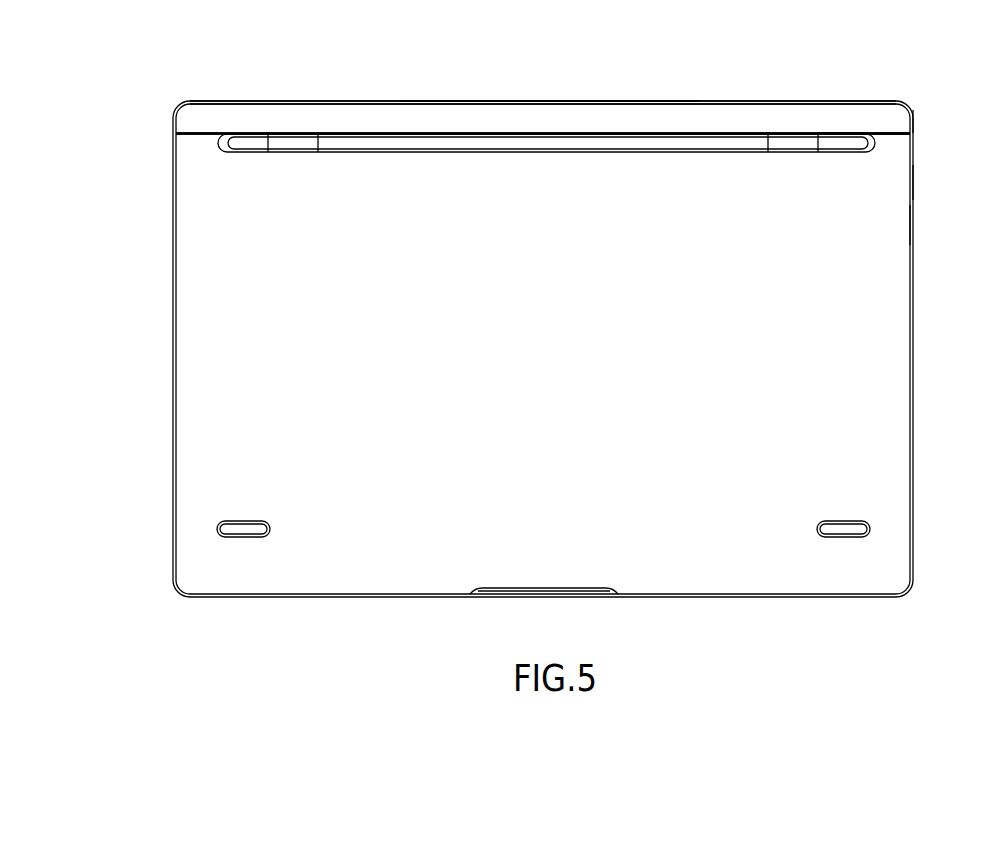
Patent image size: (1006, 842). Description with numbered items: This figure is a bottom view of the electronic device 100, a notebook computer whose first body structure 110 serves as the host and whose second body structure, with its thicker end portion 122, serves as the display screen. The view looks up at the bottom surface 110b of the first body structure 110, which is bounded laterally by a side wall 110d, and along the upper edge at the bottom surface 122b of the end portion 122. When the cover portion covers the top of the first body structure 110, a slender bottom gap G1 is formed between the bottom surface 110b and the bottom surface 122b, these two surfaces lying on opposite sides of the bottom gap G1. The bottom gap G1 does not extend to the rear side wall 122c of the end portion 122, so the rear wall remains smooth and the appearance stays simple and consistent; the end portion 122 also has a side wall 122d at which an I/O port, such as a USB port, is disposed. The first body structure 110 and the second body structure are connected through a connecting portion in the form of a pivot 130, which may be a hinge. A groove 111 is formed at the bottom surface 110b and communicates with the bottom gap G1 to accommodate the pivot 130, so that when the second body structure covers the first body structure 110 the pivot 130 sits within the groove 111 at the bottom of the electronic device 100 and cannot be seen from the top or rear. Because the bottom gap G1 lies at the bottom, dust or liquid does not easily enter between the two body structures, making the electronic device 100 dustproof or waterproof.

The electronic device 100 is at (75, 50).
The first body structure 110 is at (912, 316).
The bottom surface of the first body structure 110b is at (892, 224).
The side wall of the first body structure 110d is at (913, 181).
The end portion 122 is at (628, 97).
The bottom surface of the end portion 122b is at (457, 116).
The rear side wall of the end portion 122c is at (531, 101).
The side wall of the end portion 122d is at (913, 121).
The pivot 130 is at (792, 142).
The groove 111 is at (838, 123).
The bottom gap G1 is at (887, 120).